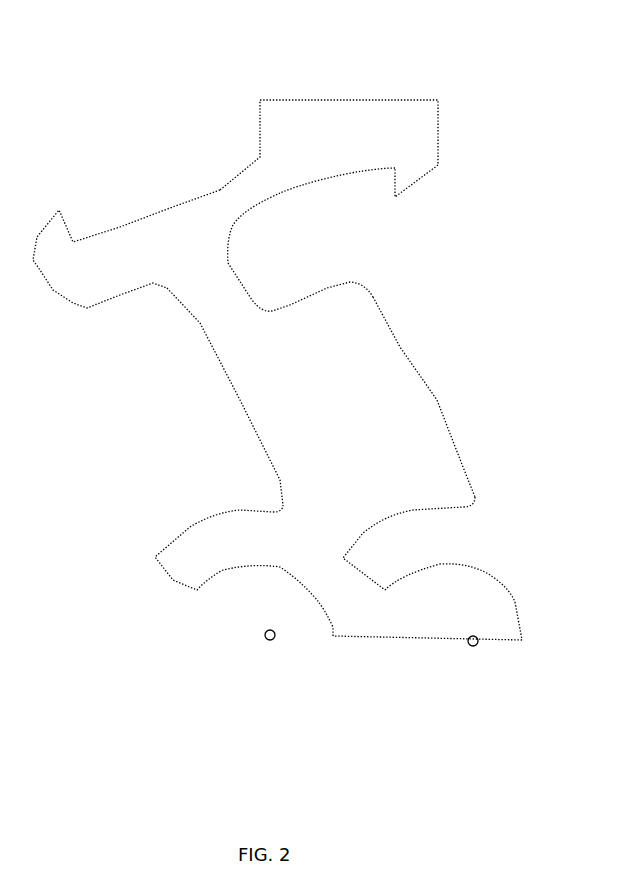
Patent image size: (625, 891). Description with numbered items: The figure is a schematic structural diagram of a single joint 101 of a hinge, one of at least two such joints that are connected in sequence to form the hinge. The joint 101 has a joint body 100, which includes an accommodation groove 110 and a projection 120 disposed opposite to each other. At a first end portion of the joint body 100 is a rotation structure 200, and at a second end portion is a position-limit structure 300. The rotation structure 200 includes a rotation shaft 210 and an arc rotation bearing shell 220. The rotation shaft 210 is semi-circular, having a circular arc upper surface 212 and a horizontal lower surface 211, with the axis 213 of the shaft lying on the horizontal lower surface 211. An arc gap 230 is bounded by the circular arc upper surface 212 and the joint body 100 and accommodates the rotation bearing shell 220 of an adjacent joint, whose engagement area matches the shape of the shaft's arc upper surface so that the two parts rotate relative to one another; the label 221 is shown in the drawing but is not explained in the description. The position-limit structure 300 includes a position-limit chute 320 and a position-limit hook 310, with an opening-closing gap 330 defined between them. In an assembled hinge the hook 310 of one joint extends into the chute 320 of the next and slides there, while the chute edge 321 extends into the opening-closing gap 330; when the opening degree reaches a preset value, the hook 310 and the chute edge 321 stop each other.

The joint 101 is at (490, 107).
The joint body 100 is at (101, 413).
The accommodation groove 110 is at (246, 413).
The projection 120 is at (430, 426).
The rotation structure 200 is at (510, 760).
The rotation shaft 210 is at (548, 726).
The horizontal lower surface 211 is at (502, 642).
The circular arc upper surface 212 is at (517, 603).
The axis 213 is at (469, 643).
The arc rotation bearing shell 220 is at (206, 560).
The mounting hole 221 is at (268, 641).
The arc gap 230 is at (407, 548).
The position-limit structure 300 is at (412, 62).
The position-limit hook 310 is at (65, 237).
The position-limit chute 320 is at (337, 199).
The chute edge 321 is at (413, 172).
The opening-closing gap 330 is at (184, 198).